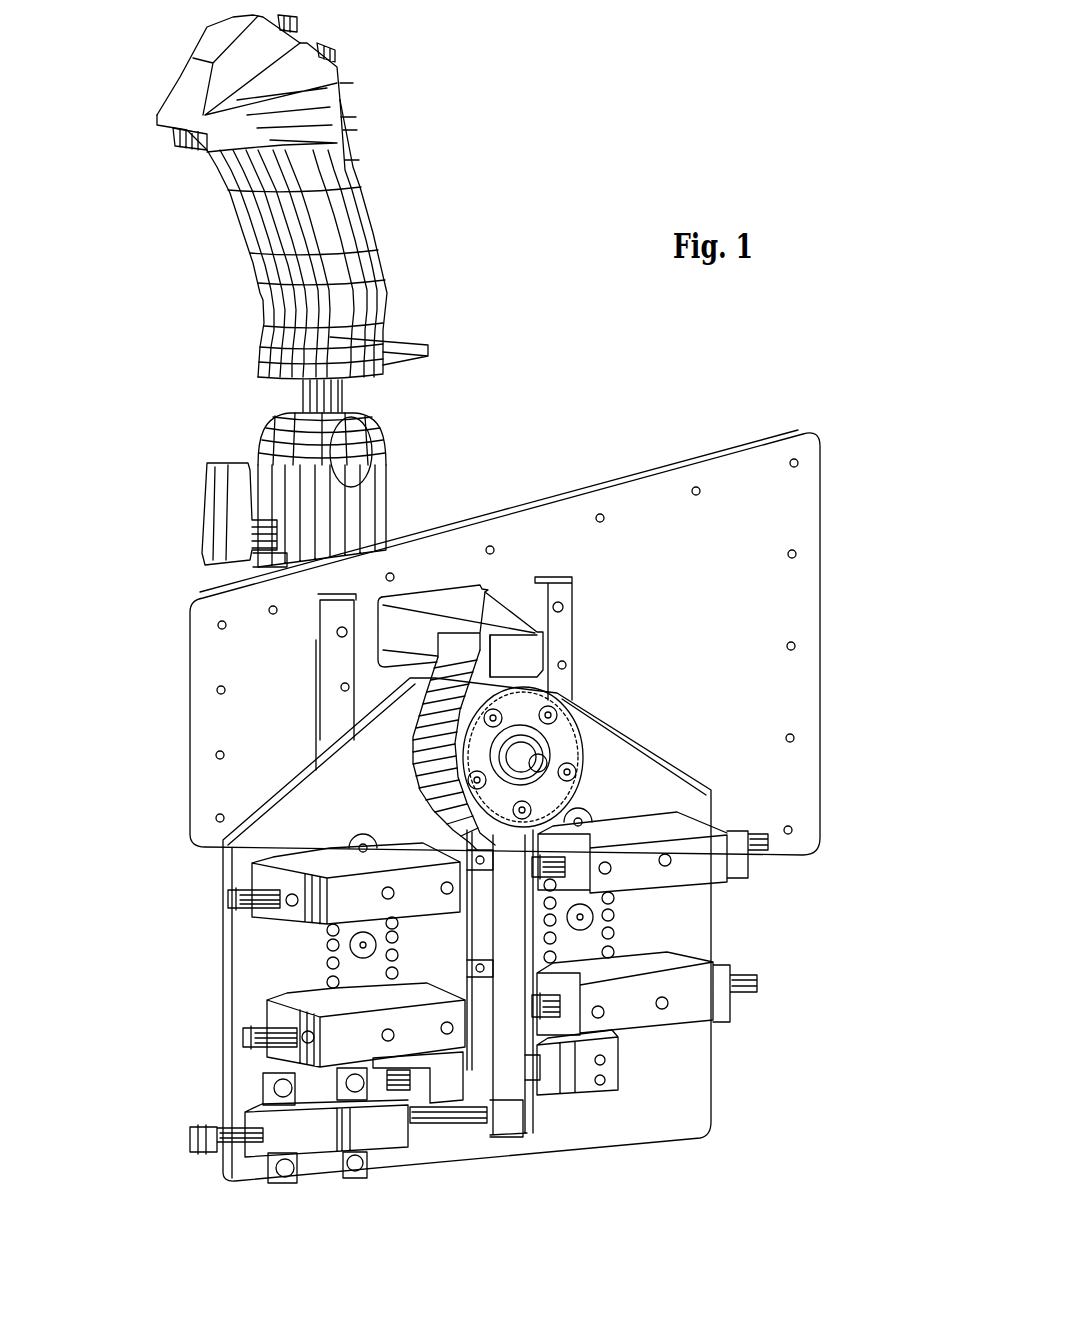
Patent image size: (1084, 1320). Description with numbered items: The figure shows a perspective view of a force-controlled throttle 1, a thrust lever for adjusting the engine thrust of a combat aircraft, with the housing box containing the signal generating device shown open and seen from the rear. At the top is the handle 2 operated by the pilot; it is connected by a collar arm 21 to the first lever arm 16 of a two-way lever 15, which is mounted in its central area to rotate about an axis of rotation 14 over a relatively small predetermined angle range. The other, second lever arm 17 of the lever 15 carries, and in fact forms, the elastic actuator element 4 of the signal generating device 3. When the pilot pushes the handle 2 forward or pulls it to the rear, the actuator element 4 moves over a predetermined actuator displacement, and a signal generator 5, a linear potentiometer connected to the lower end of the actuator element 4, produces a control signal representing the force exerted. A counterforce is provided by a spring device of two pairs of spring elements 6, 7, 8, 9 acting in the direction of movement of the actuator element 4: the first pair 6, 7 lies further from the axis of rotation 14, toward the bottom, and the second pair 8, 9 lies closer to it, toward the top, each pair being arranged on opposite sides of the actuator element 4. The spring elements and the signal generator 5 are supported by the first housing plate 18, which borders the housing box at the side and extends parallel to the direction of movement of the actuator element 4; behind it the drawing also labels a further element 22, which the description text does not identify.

The force-controlled throttle 1 is at (543, 428).
The handle 2 is at (330, 233).
The signal generating device 3 is at (177, 1028).
The elastic actuator element 4 is at (507, 1067).
The signal generator 5 is at (320, 1133).
The spring element 6 is at (280, 1055).
The spring element 7 is at (693, 1012).
The spring element 8 is at (290, 868).
The spring element 9 is at (713, 870).
The axis of rotation 14 is at (542, 764).
The two-way lever 15 is at (410, 772).
The first lever arm 16 is at (403, 622).
The second lever arm 17 is at (477, 940).
The first housing plate 18 is at (677, 1088).
The collar arm 21 is at (436, 597).
The back plate 22 is at (733, 589).